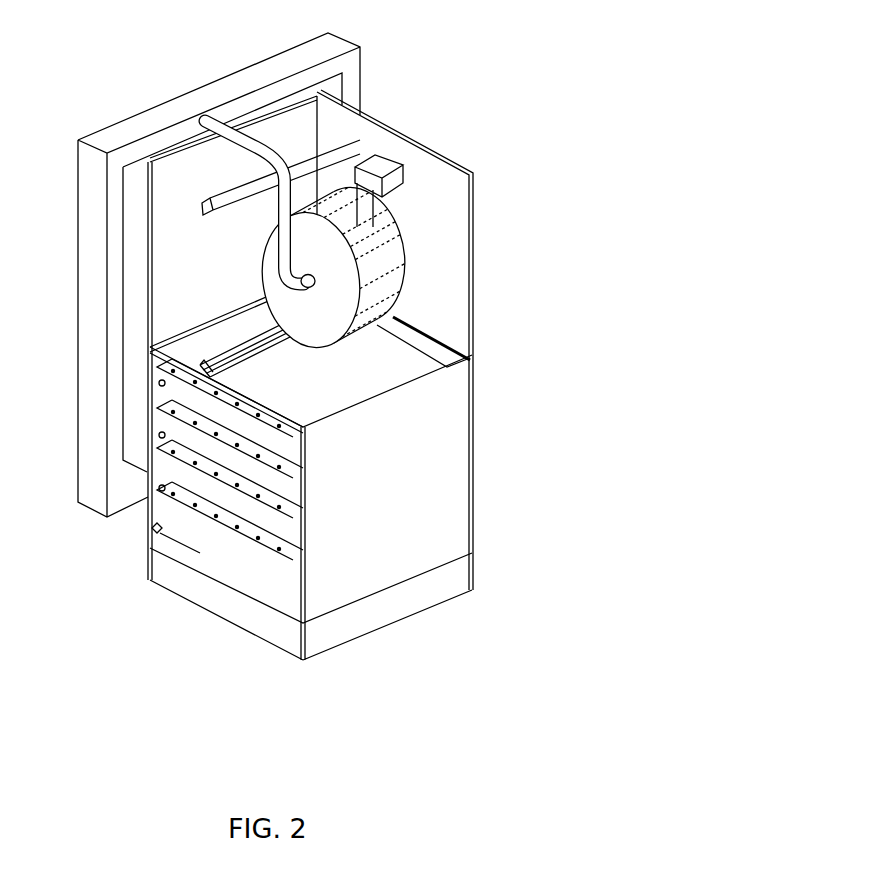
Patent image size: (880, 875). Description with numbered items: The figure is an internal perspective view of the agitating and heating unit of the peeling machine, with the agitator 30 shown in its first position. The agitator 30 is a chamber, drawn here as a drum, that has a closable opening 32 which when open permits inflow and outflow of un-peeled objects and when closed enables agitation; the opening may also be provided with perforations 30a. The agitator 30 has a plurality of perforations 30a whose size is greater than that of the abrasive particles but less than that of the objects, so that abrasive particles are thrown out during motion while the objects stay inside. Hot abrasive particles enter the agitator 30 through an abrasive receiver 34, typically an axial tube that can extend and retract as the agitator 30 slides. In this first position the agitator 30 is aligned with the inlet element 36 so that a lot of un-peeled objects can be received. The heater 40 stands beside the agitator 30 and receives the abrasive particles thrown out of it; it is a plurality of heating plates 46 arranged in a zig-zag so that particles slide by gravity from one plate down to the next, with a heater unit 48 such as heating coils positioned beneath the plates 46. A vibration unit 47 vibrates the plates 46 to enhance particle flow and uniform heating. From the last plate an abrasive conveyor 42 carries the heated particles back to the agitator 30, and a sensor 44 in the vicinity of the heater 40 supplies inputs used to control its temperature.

The agitator 30 is at (405, 215).
The perforations 30a is at (382, 268).
The closable opening 32 is at (400, 240).
The abrasive receiver 34 is at (238, 142).
The inlet element 36 is at (385, 162).
The heater 40 is at (130, 530).
The abrasive conveyor 42 is at (170, 112).
The sensor 44 is at (160, 533).
The heating plates 46 is at (200, 508).
The vibration unit 47 is at (270, 632).
The heater unit 48 is at (237, 547).